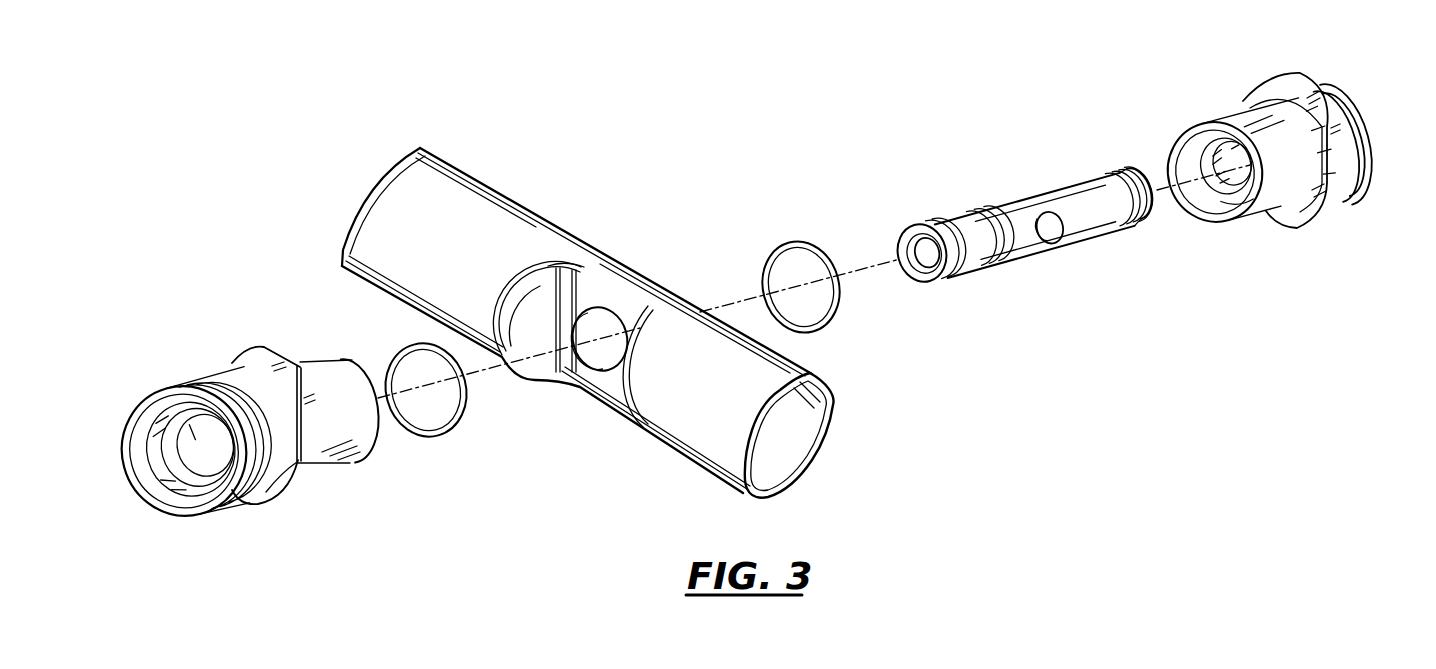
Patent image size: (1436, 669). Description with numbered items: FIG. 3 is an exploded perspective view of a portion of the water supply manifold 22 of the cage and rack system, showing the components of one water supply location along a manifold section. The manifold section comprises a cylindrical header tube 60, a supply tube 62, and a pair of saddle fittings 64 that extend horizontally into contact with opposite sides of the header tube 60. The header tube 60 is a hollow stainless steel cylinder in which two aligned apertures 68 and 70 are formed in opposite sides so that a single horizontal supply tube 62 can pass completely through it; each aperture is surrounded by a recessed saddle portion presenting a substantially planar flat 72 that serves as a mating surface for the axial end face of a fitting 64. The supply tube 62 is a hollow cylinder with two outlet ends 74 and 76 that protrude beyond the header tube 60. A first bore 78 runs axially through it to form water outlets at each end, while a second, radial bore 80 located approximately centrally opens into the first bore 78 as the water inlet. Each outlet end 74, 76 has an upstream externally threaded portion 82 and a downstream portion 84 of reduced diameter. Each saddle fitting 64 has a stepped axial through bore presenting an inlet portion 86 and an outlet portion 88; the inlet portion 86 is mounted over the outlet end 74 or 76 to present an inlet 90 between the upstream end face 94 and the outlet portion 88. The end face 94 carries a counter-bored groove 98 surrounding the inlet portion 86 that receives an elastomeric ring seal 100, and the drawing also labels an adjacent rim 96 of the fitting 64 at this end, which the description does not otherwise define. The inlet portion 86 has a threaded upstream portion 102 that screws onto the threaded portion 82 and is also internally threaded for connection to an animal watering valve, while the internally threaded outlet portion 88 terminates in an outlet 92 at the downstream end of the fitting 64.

The water supply manifold 22 is at (463, 152).
The header tube 60 is at (500, 198).
The supply tube 62 is at (1029, 190).
The saddle fitting 64 is at (232, 358).
The aperture 68 is at (598, 358).
The aperture 70 is at (599, 372).
The flat 72 is at (688, 302).
The outlet end 74 is at (977, 275).
The outlet end 76 is at (1128, 231).
The first bore 78 is at (915, 270).
The second, radial bore 80 is at (1048, 242).
The externally threaded portion 82 is at (962, 222).
The downstream portion 84 is at (945, 226).
The inlet portion 86 is at (308, 362).
The outlet portion 88 is at (206, 376).
The inlet 90 is at (1212, 157).
The outlet 92 is at (170, 470).
The end face 94 is at (346, 376).
The rim 96 is at (202, 490).
The counter-bored groove 98 is at (1224, 218).
The elastomeric ring seal 100 is at (436, 436).
The threaded upstream portion 102 is at (1208, 173).